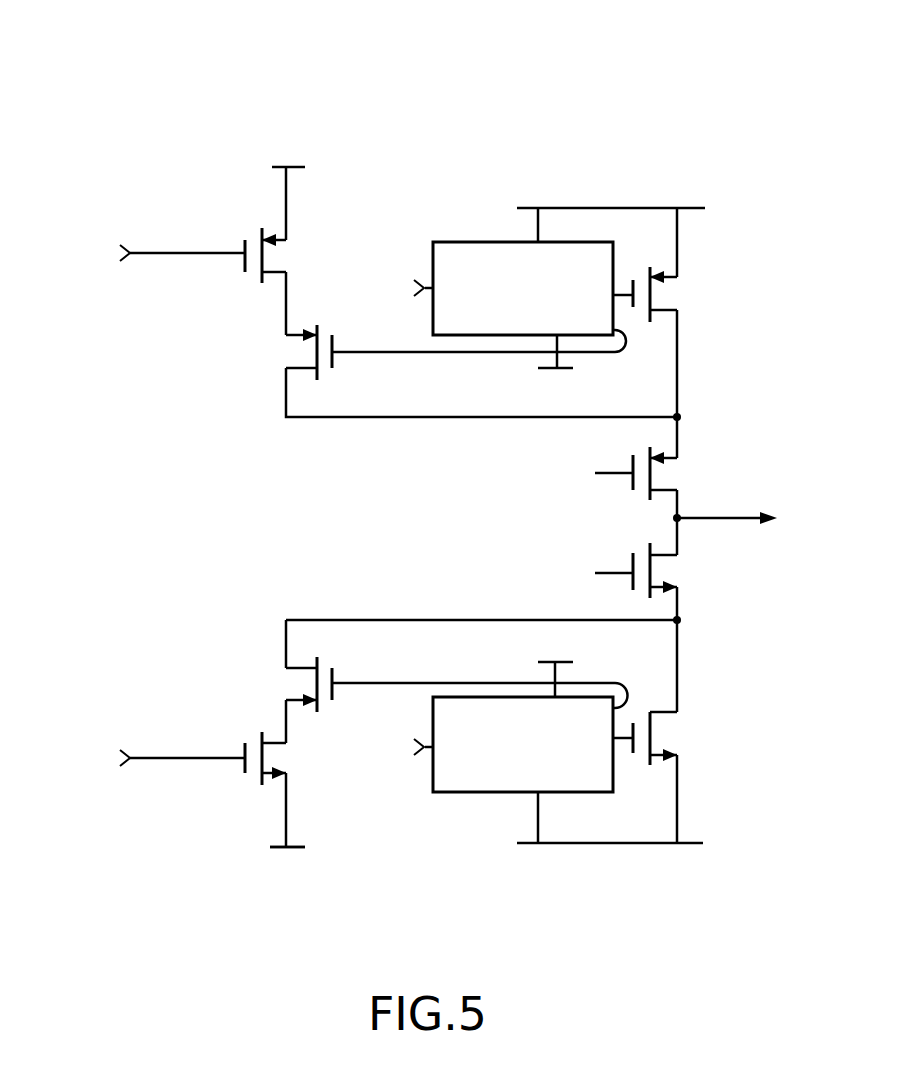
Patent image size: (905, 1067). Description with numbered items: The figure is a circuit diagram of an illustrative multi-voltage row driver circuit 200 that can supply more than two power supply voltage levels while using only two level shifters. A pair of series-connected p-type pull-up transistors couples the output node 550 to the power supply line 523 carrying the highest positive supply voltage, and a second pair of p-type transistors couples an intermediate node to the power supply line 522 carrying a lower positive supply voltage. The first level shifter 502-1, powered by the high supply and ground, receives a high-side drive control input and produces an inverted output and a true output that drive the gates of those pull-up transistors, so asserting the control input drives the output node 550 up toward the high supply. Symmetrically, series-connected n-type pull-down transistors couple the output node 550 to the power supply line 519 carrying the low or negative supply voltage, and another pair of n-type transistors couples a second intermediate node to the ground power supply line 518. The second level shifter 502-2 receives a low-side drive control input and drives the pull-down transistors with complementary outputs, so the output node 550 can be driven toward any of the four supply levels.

The row driver circuit 200 is at (690, 80).
The power supply line 522 is at (305, 167).
The power supply line 523 is at (660, 208).
The first level shifter 502-1 is at (477, 242).
The second level shifter 502-2 is at (477, 792).
The output node 550 is at (690, 500).
The power supply line 518 is at (297, 847).
The power supply line 519 is at (683, 843).